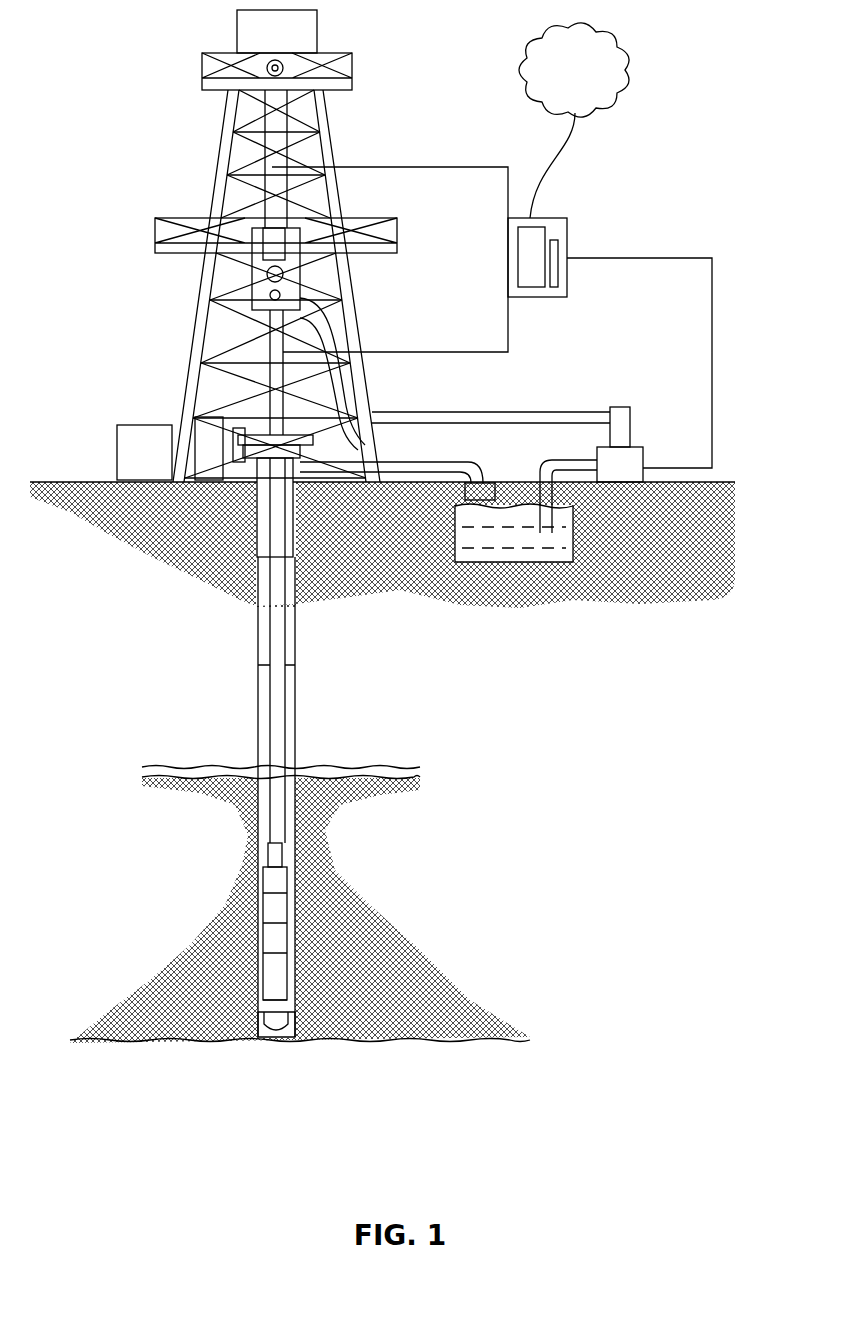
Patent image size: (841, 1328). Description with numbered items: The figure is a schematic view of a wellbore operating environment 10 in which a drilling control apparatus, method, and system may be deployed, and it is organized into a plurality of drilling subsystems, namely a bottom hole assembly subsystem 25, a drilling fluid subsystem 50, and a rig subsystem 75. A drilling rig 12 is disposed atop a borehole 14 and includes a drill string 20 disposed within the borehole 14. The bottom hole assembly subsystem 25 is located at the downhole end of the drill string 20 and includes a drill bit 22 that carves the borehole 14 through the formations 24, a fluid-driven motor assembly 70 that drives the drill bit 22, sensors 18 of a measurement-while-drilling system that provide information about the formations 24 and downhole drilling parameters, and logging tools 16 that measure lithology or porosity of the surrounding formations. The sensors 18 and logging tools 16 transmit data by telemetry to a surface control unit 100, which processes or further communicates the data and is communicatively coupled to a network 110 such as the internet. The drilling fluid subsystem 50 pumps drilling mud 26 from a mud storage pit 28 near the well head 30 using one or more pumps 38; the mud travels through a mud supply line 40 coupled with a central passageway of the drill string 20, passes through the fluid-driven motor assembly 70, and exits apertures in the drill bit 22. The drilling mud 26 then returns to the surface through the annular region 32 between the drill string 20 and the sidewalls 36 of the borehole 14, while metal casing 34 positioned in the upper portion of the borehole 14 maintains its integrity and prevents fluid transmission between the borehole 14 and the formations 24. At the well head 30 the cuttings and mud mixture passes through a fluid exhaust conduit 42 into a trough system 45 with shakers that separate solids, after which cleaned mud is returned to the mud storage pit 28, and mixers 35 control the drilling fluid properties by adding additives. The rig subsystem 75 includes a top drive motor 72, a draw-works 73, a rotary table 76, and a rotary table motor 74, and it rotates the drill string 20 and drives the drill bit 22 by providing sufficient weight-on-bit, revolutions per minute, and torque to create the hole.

The wellbore operating environment 10 is at (143, 41).
The drilling rig 12 is at (200, 208).
The borehole 14 is at (297, 632).
The logging tools 16 is at (307, 882).
The sensors 18 is at (253, 987).
The drill string 20 is at (273, 803).
The drill bit 22 is at (273, 1038).
The formations 24 is at (360, 1045).
The bottom hole assembly subsystem 25 is at (240, 940).
The drilling mud 26 is at (540, 555).
The mud storage pit 28 is at (473, 565).
The well head 30 is at (422, 440).
The annular region 32 is at (267, 845).
The metal casing 34 is at (268, 525).
The mixers 35 is at (645, 458).
The sidewalls 36 is at (297, 738).
The pumps 38 is at (632, 420).
The mud supply line 40 is at (563, 411).
The fluid exhaust conduit 42 is at (467, 462).
The trough system 45 is at (495, 466).
The drilling fluid subsystem 50 is at (612, 374).
The fluid-driven motor assembly 70 is at (293, 942).
The top drive motor 72 is at (250, 268).
The draw-works 73 is at (228, 150).
The rotary table motor 74 is at (117, 437).
The rig subsystem 75 is at (118, 276).
The rotary table 76 is at (213, 387).
The surface control unit 100 is at (571, 194).
The network 110 is at (574, 120).